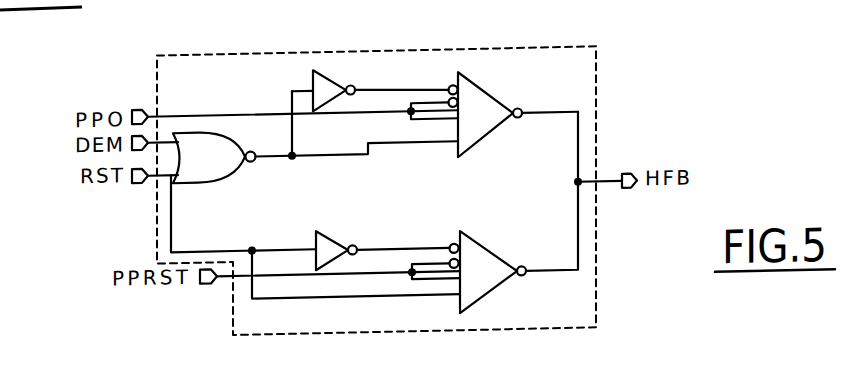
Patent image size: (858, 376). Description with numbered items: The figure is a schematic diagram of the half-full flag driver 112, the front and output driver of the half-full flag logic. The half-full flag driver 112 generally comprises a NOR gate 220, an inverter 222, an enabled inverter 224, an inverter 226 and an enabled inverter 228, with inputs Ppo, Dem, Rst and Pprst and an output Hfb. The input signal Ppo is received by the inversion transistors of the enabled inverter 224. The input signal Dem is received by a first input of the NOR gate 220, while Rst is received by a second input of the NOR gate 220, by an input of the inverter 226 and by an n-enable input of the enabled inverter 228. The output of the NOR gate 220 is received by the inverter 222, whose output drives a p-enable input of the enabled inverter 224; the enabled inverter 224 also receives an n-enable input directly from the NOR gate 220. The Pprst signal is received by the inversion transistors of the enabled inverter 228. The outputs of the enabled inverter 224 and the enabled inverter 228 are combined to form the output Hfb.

The half-full flag driver 112 is at (250, 50).
The NOR gate 220 is at (223, 174).
The inverter 222 is at (334, 75).
The enabled inverter 224 is at (493, 102).
The inverter 226 is at (328, 232).
The enabled inverter 228 is at (502, 264).